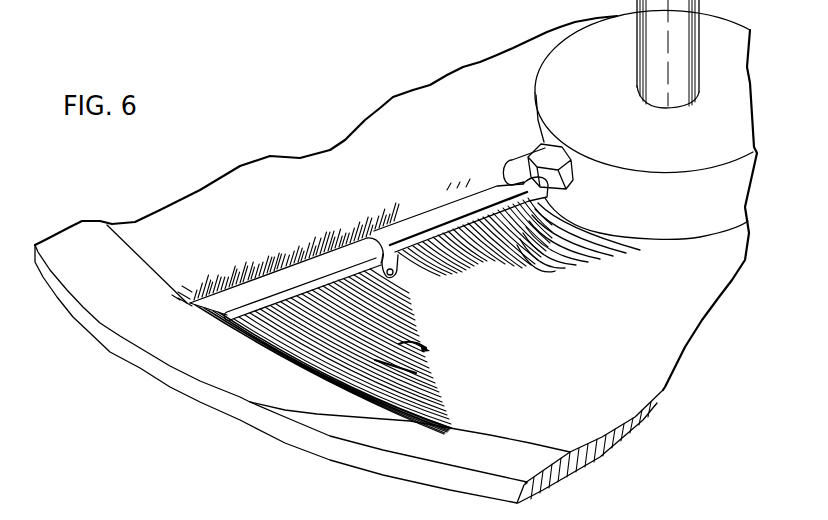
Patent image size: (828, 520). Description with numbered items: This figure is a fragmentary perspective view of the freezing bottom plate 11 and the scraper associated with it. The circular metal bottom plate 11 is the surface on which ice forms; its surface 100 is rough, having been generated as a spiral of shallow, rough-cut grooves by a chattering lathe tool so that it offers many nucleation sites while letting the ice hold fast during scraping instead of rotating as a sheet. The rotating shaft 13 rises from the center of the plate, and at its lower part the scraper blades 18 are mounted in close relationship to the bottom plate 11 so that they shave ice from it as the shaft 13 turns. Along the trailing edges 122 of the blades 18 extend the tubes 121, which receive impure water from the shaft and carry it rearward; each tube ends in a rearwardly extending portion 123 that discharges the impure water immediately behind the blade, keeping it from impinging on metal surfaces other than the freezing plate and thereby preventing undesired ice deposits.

The bottom plate 11 is at (147, 265).
The rotating shaft 13 is at (687, 88).
The scraper blades 18 is at (260, 285).
The surface 100 is at (432, 353).
The tubes 121 is at (442, 233).
The trailing edges 122 is at (347, 233).
The rearwardly extending portion 123 is at (393, 277).